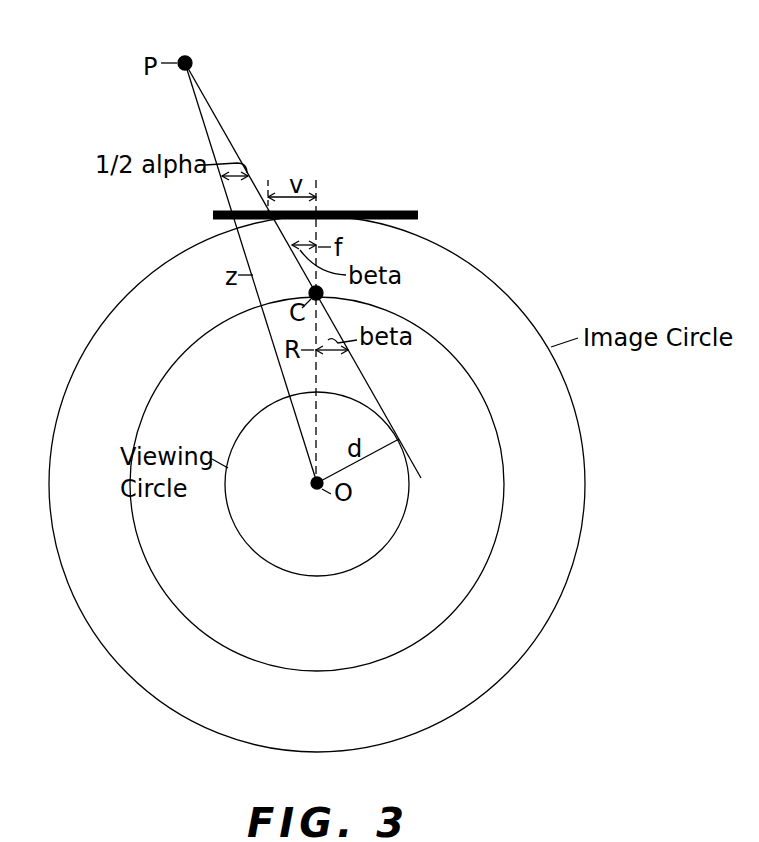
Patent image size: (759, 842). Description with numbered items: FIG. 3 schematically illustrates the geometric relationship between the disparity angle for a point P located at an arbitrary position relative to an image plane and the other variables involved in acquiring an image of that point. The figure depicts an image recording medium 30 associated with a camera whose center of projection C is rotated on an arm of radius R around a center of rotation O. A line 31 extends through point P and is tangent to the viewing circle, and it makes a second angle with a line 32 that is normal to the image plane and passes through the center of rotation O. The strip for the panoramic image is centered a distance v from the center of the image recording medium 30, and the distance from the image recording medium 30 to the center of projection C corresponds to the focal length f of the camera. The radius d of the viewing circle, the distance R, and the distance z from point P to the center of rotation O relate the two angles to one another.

The image recording medium 30 is at (416, 210).
The line 31 is at (370, 388).
The line normal to the image plane 32 is at (316, 186).